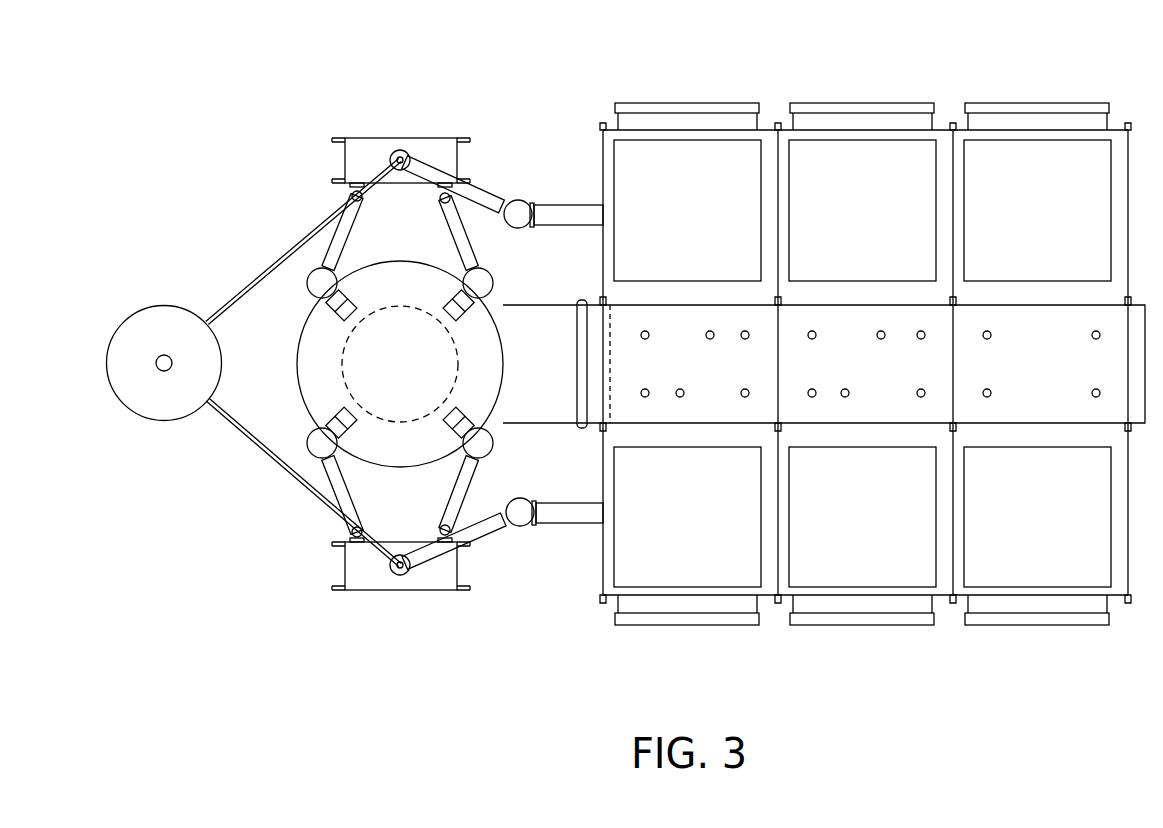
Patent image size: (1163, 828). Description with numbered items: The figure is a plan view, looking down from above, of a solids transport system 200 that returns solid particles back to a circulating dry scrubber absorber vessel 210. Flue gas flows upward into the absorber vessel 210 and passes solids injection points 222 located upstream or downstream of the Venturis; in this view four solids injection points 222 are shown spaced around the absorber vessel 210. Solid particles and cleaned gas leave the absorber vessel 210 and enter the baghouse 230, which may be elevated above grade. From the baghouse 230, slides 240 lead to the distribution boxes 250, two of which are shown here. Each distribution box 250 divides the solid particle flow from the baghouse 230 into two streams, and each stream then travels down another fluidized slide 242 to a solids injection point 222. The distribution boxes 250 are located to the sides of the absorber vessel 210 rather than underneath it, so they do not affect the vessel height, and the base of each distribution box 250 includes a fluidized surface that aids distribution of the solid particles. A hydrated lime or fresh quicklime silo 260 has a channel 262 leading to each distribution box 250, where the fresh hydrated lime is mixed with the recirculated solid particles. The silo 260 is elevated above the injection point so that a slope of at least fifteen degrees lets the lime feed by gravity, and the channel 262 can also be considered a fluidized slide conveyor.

The solids transport system 200 is at (298, 41).
The absorber vessel 210 is at (325, 372).
The solids injection point 222 is at (453, 337).
The baghouse 230 is at (880, 555).
The slide 240 is at (492, 190).
The fluidized slide 242 is at (455, 227).
The distribution box 250 is at (375, 152).
The hydrated lime silo 260 is at (132, 390).
The channel 262 is at (262, 447).